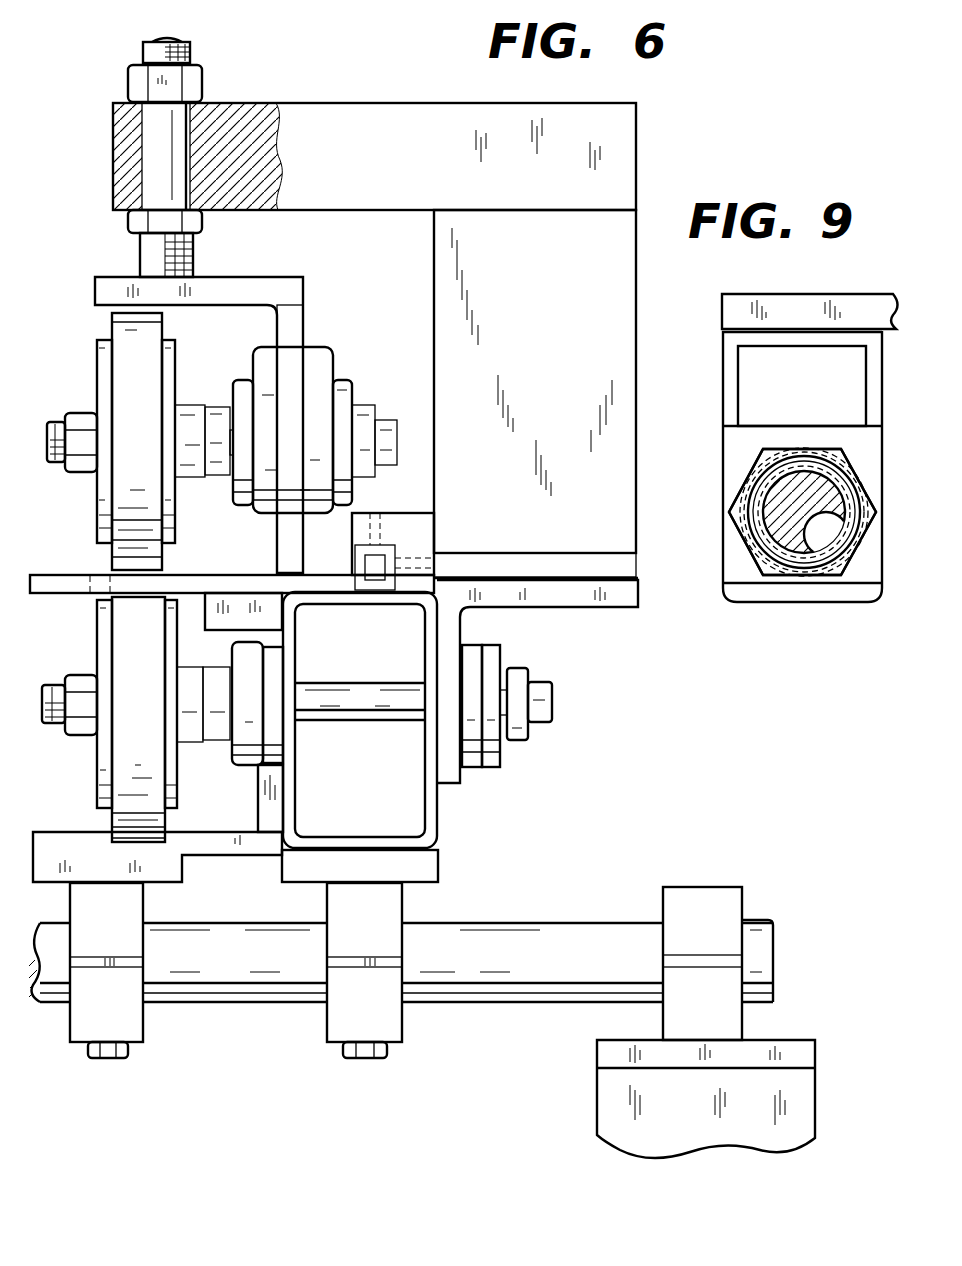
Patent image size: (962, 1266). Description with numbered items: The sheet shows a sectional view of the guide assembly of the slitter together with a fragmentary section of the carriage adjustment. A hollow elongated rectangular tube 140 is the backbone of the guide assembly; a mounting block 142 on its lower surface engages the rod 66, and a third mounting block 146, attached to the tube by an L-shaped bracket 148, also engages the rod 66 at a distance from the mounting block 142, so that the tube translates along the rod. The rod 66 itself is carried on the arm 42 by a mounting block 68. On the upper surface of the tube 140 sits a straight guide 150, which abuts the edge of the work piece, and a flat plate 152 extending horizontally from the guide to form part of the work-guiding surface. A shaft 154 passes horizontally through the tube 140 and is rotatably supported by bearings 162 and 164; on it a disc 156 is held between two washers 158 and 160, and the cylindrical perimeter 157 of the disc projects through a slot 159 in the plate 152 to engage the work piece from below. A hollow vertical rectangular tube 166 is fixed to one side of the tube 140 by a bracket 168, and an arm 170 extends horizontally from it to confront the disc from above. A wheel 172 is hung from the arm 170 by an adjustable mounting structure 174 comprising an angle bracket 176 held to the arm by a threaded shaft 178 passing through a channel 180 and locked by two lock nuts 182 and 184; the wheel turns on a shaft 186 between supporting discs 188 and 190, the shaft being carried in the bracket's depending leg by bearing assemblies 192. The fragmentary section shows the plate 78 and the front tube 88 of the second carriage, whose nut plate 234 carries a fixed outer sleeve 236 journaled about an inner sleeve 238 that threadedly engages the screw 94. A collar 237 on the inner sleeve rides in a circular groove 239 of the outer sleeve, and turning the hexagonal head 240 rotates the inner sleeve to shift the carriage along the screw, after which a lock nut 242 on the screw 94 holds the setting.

In FIG. 6, the arm 42 is at (802, 1050).
In FIG. 6, the rod 66 is at (535, 962).
In FIG. 6, the mounting block 68 is at (686, 898).
In FIG. 9, the plate 78 is at (772, 302).
In FIG. 9, the front tube 88 is at (730, 362).
In FIG. 9, the screw 94 is at (775, 527).
In FIG. 6, the rectangular tube 140 is at (433, 650).
In FIG. 6, the mounting block 142 is at (338, 1015).
In FIG. 6, the third mounting block 146 is at (135, 1022).
In FIG. 6, the L-shaped bracket 148 is at (200, 846).
In FIG. 6, the guide 150 is at (420, 534).
In FIG. 6, the plate 152 is at (65, 585).
In FIG. 6, the shaft 154 is at (380, 697).
In FIG. 6, the disc 156 is at (156, 745).
In FIG. 6, the perimeter 157 is at (150, 594).
In FIG. 6, the washer 158 is at (105, 760).
In FIG. 6, the slot 159 is at (228, 605).
In FIG. 6, the washer 160 is at (170, 775).
In FIG. 6, the bearing 162 is at (245, 656).
In FIG. 6, the bearing 164 is at (490, 745).
In FIG. 6, the vertical rectangular tube 166 is at (566, 381).
In FIG. 6, the bracket 168 is at (553, 597).
In FIG. 6, the arm 170 is at (386, 166).
In FIG. 6, the wheel 172 is at (156, 392).
In FIG. 6, the adjustable mounting structure 174 is at (322, 320).
In FIG. 6, the angle bracket 176 is at (247, 295).
In FIG. 6, the threaded shaft 178 is at (150, 255).
In FIG. 6, the channel 180 is at (148, 125).
In FIG. 6, the lock nut 182 is at (195, 82).
In FIG. 6, the lock nut 184 is at (200, 222).
In FIG. 6, the shaft 186 is at (70, 418).
In FIG. 6, the supporting disc 188 is at (100, 350).
In FIG. 6, the supporting disc 190 is at (170, 375).
In FIG. 6, the bearing assembly 192 is at (266, 388).
In FIG. 9, the nut plate 234 is at (735, 552).
In FIG. 9, the outer sleeve 236 is at (745, 470).
In FIG. 9, the collar 237 is at (847, 555).
In FIG. 9, the inner sleeve 238 is at (760, 486).
In FIG. 9, the circular groove 239 is at (826, 557).
In FIG. 9, the hexagonal head 240 is at (782, 447).
In FIG. 9, the lock nut 242 is at (733, 516).